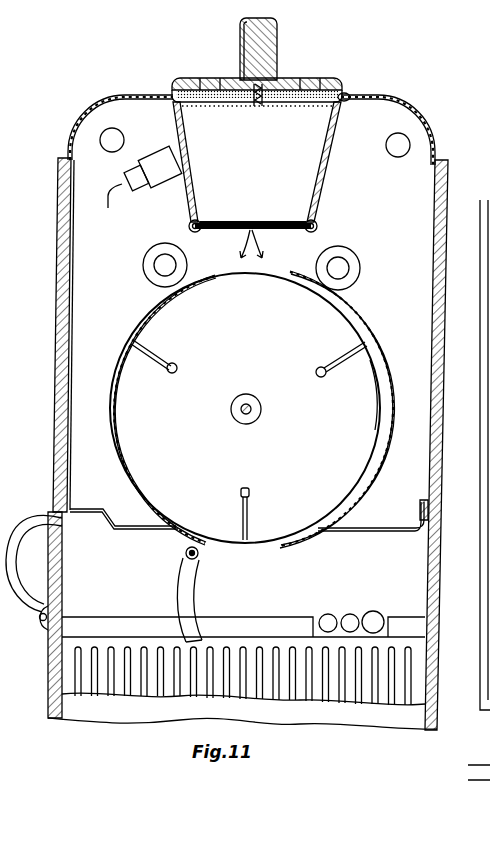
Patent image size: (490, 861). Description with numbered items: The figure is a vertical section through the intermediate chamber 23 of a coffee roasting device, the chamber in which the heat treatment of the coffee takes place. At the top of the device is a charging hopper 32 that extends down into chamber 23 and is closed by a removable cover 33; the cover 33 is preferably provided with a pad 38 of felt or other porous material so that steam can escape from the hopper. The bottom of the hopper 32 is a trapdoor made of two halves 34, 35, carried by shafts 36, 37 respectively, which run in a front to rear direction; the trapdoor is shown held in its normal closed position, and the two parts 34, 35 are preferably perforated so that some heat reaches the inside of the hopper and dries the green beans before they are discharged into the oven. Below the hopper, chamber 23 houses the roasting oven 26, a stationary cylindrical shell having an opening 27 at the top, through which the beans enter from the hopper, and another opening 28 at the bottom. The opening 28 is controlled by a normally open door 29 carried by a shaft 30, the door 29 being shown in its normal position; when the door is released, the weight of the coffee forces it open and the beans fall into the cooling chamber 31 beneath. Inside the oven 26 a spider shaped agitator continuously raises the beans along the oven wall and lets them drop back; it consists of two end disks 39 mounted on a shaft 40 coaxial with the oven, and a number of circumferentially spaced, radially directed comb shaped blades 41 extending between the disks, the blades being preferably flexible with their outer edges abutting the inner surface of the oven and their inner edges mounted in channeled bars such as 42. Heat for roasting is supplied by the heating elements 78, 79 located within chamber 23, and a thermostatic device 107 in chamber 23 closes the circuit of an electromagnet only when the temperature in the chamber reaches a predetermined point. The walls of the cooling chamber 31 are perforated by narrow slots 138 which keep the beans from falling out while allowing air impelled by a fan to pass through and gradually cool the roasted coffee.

The intermediate chamber 23 is at (412, 168).
The cooling chamber 31 is at (438, 577).
The removable cover 33 is at (293, 80).
The pad 38 is at (348, 94).
The charging hopper 32 is at (326, 168).
The thermostatic device 107 is at (158, 162).
The trapdoor half 35 is at (261, 229).
The trapdoor half 34 is at (224, 229).
The shaft 36 is at (189, 224).
The shaft 37 is at (318, 226).
The heating element 78 is at (143, 266).
The heating element 79 is at (360, 268).
The opening 27 is at (268, 280).
The roasting oven 26 is at (350, 330).
The end disk 39 is at (378, 402).
The shaft 40 is at (252, 414).
The comb shaped blade 41 is at (346, 360).
The channeled bar 42 is at (320, 376).
The opening 28 is at (263, 540).
The shaft 30 is at (186, 555).
The door 29 is at (200, 590).
The slots 138 is at (393, 680).